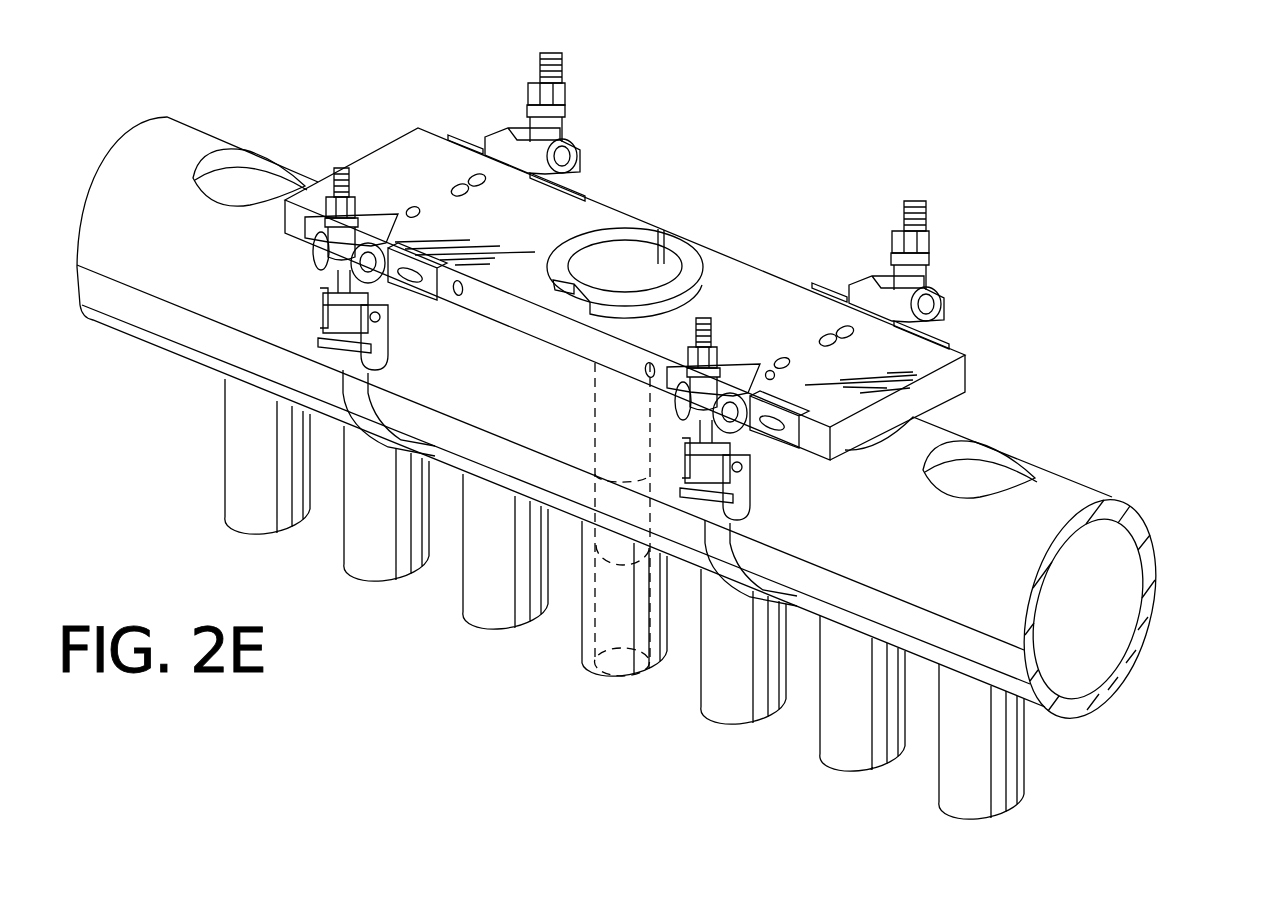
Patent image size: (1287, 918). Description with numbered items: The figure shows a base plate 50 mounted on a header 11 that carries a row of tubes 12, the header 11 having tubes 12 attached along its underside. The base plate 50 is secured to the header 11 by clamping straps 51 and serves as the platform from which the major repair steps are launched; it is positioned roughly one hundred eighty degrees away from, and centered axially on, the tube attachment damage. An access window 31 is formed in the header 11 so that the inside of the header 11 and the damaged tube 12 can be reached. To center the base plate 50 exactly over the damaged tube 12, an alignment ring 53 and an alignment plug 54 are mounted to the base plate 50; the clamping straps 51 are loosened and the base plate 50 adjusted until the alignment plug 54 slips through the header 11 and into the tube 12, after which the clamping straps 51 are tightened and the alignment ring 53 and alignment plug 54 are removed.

The header 11 is at (1154, 606).
The tube 12 is at (367, 562).
The access window 31 is at (988, 477).
The base plate 50 is at (964, 368).
The clamping straps 51 is at (313, 260).
The alignment ring 53 is at (653, 240).
The alignment plug 54 is at (612, 570).